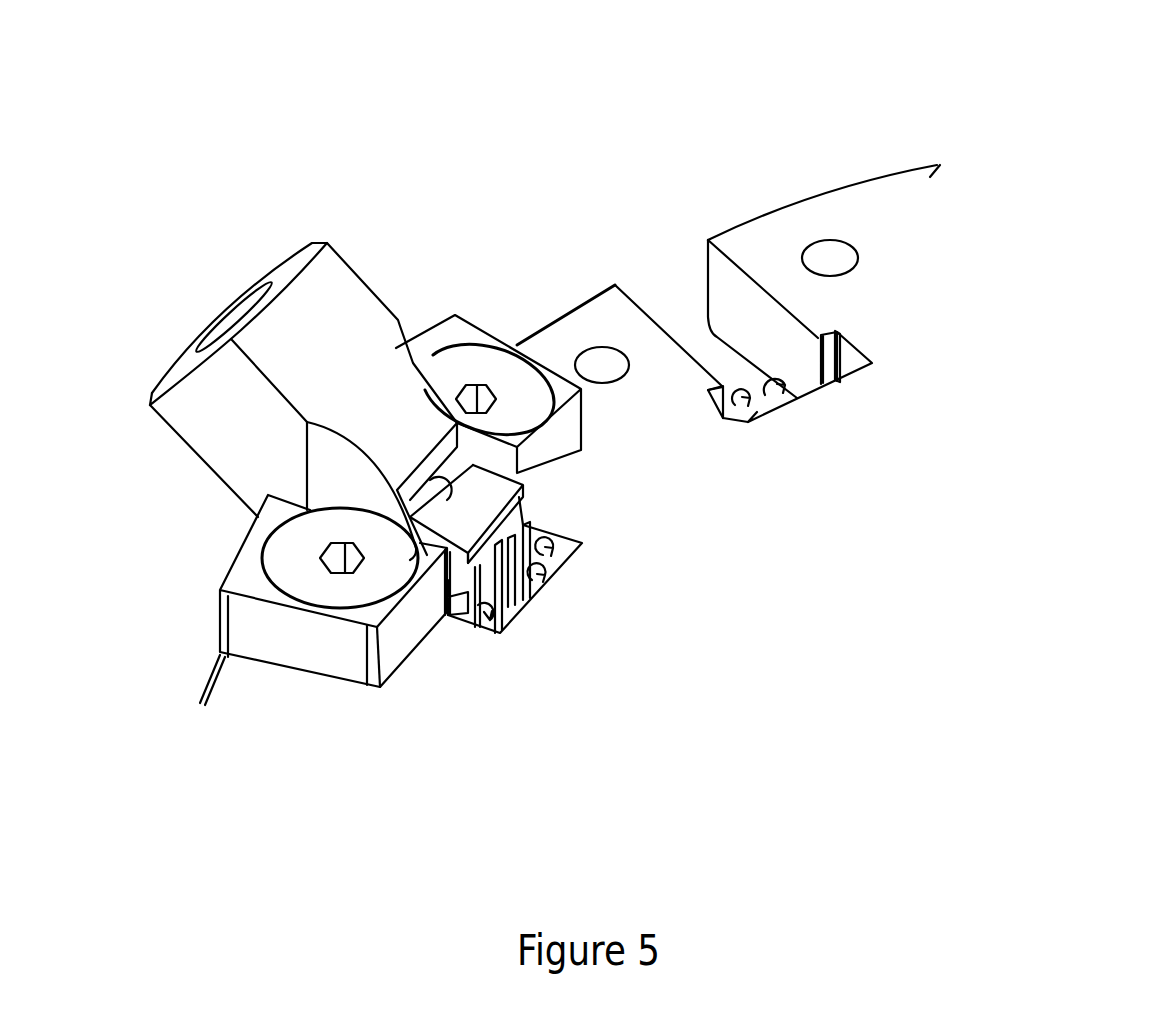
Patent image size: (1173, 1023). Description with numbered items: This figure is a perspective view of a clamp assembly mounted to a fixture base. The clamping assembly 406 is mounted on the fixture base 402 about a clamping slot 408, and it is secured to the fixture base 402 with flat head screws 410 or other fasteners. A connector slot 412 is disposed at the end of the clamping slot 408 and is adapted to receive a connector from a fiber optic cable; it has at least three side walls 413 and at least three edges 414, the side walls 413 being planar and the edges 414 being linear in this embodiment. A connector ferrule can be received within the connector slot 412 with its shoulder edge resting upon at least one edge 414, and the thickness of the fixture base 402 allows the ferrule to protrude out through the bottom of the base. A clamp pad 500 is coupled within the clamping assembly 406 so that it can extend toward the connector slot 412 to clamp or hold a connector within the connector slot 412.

The fixture base 402 is at (918, 173).
The clamping assembly 406 is at (397, 247).
The clamping slot 408 is at (682, 287).
The flat head screws 410 is at (293, 562).
The connector slot 412 is at (753, 393).
The side walls 413 is at (845, 360).
The edges 414 is at (847, 348).
The clamp pad 500 is at (477, 607).